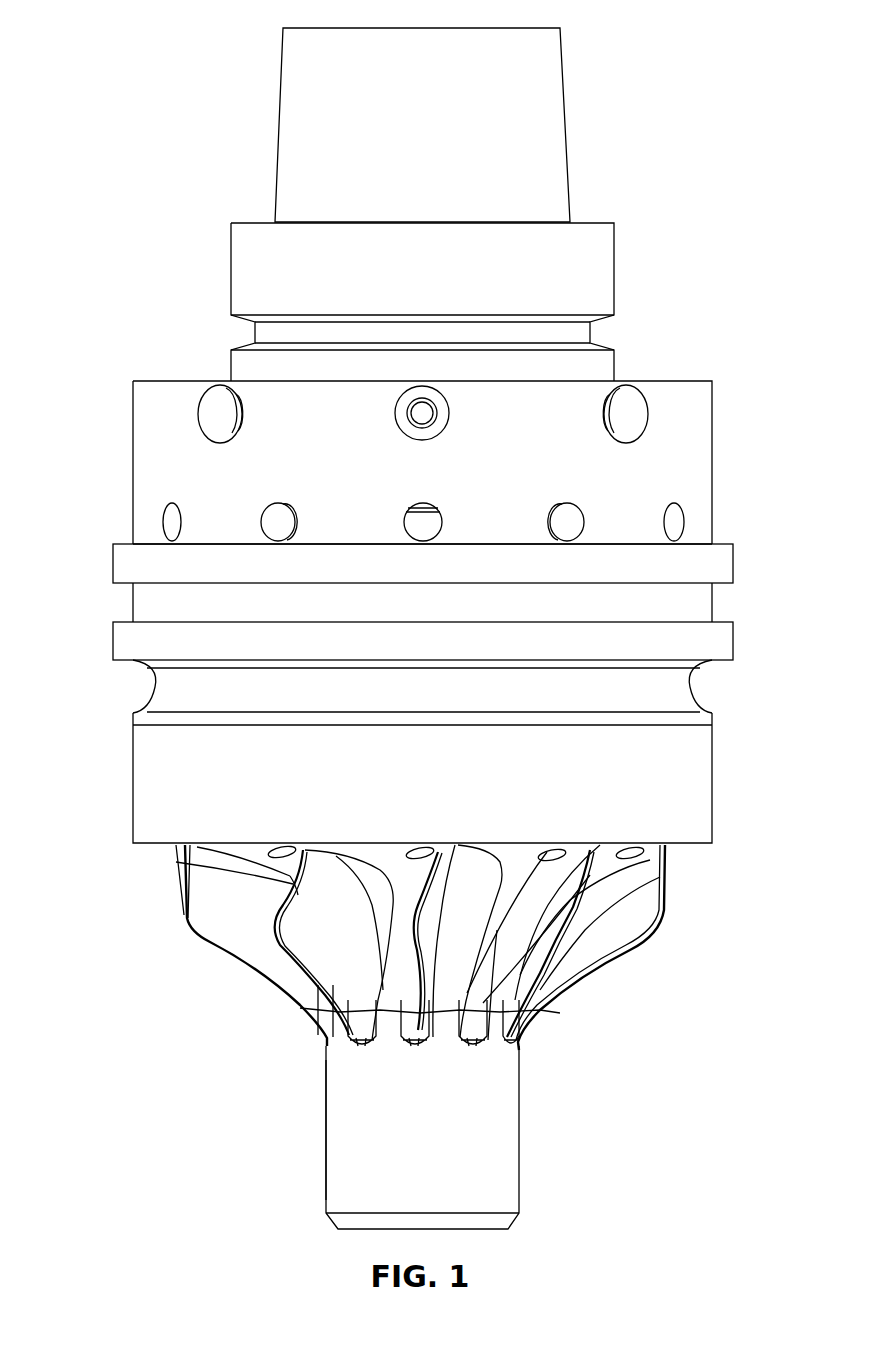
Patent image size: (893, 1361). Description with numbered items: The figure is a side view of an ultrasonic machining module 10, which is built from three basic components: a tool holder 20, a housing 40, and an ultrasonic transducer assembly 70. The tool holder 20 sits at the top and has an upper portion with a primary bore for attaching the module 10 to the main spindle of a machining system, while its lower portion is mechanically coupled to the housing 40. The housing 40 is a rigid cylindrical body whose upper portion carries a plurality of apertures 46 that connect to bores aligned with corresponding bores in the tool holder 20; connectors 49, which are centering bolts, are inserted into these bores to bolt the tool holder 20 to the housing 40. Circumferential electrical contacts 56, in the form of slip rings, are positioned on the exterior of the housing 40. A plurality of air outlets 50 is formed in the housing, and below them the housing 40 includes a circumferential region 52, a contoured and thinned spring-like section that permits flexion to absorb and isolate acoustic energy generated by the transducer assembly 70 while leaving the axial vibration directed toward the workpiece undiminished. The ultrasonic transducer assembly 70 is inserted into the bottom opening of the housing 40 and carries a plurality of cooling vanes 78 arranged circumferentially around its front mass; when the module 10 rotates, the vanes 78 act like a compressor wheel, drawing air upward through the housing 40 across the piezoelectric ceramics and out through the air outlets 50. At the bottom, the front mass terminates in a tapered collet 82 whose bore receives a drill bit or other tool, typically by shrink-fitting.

The ultrasonic machining module 10 is at (222, 82).
The tool holder 20 is at (568, 148).
The housing 40 is at (132, 467).
The apertures 46 is at (648, 406).
The connectors 49 is at (422, 440).
The air outlets 50 is at (684, 522).
The circumferential region 52 is at (153, 685).
The circumferential electrical contacts 56 is at (113, 563).
The ultrasonic transducer assembly 70 is at (522, 1130).
The vanes 78 is at (188, 925).
The tapered collet 82 is at (326, 1115).